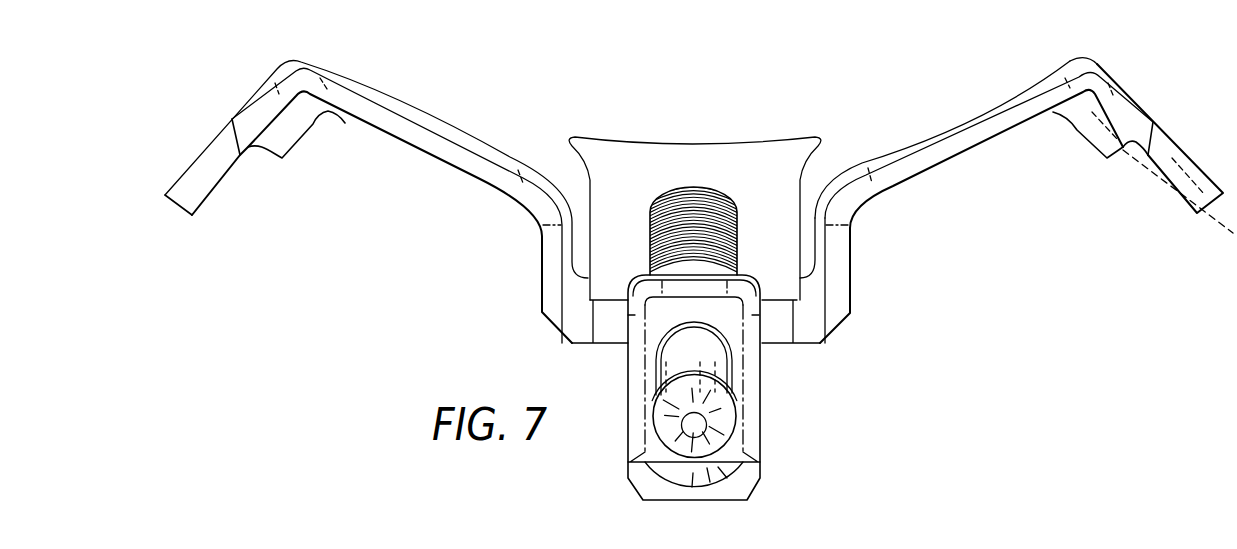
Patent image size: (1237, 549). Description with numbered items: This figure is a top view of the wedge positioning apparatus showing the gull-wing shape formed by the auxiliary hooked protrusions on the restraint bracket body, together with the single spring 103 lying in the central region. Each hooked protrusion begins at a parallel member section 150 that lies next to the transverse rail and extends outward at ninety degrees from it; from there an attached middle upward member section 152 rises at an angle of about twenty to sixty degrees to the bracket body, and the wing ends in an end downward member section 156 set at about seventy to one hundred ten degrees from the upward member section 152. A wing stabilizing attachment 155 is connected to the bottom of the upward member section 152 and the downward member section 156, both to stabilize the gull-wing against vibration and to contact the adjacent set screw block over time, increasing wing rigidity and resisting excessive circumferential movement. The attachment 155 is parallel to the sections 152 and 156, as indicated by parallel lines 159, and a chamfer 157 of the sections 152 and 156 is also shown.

The single spring 103 is at (650, 230).
The parallel member section 150 is at (817, 305).
The upward member section 152 is at (973, 118).
The wing stabilizing attachment 155 is at (294, 132).
The downward member section 156 is at (1107, 65).
The chamfer 157 is at (927, 158).
The parallel lines 159 is at (1203, 290).